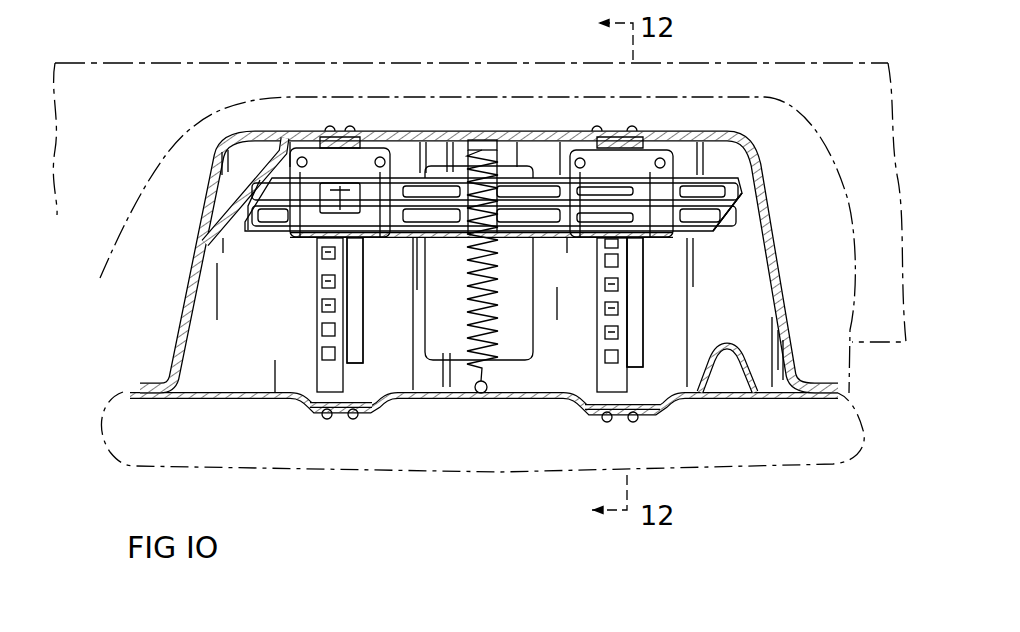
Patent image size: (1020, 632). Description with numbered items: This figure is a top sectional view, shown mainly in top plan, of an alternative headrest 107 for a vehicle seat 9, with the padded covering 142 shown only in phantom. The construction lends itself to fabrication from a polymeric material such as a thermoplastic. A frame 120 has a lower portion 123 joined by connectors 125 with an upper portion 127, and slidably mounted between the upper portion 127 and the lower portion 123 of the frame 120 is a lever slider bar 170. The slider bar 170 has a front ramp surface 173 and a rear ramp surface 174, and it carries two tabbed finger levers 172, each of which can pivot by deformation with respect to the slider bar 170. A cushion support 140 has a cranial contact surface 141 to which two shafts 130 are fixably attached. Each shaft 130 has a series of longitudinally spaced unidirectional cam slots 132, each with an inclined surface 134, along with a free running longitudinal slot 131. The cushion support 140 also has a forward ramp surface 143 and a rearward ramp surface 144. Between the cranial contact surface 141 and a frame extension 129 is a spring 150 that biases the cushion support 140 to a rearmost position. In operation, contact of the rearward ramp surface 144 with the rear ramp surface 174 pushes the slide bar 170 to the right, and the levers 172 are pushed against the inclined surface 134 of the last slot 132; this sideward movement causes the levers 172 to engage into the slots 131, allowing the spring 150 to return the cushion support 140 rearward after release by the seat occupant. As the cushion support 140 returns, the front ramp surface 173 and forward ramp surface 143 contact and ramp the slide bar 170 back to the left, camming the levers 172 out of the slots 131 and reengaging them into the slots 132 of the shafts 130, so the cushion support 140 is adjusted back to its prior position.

The vehicle seat 9 is at (812, 85).
The headrest 107 is at (753, 108).
The frame 120 is at (380, 146).
The lower portion 123 is at (716, 152).
The connectors 125 is at (303, 157).
The upper portion 127 is at (392, 160).
The frame extension 129 is at (490, 140).
The shafts 130 is at (318, 307).
The free running longitudinal slot 131 is at (352, 344).
The unidirectional cam slots 132 is at (322, 280).
The inclined surface 134 is at (335, 302).
The cushion support 140 is at (788, 306).
The cranial contact surface 141 is at (413, 399).
The padded covering 142 is at (797, 435).
The forward ramp surface 143 is at (722, 350).
The rearward ramp surface 144 is at (212, 230).
The spring 150 is at (506, 335).
The lever slider bar 170 is at (713, 184).
The tabbed finger lever 172 is at (340, 205).
The front ramp surface 173 is at (716, 208).
The rear ramp surface 174 is at (270, 168).